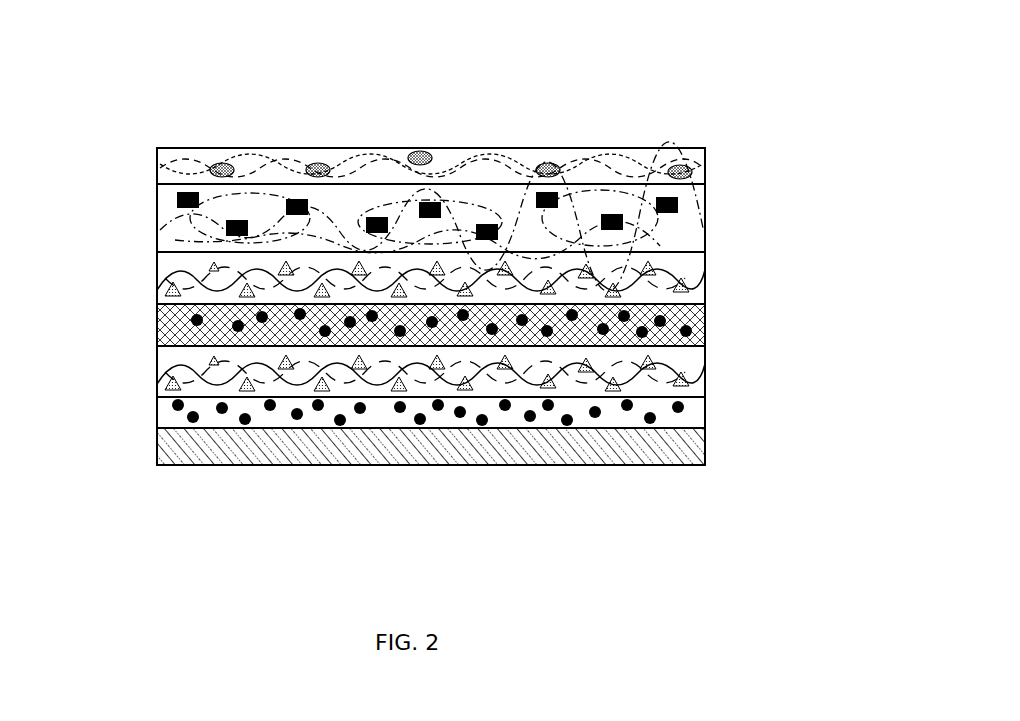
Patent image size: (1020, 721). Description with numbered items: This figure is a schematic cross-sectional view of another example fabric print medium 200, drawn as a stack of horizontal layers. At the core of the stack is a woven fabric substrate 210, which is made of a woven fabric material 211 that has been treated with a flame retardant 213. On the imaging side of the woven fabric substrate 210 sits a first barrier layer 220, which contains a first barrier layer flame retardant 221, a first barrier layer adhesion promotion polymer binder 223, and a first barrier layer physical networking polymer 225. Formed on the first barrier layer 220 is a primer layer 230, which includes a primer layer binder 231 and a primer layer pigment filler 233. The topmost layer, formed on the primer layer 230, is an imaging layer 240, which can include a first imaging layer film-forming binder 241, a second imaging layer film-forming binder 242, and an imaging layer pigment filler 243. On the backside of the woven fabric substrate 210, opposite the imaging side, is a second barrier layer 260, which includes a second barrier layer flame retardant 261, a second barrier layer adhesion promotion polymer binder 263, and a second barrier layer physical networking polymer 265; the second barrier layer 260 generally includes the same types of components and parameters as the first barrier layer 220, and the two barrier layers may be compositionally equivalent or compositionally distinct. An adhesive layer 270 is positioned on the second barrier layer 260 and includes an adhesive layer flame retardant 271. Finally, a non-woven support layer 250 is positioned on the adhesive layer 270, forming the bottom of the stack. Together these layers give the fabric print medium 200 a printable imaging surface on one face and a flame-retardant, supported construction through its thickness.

The fabric print medium 200 is at (168, 40).
The imaging layer 240 is at (452, 133).
The first imaging layer film-forming binder 241 is at (290, 165).
The second imaging layer film-forming binder 242 is at (577, 160).
The imaging layer pigment filler 243 is at (424, 152).
The primer layer 230 is at (455, 214).
The primer layer binder 231 is at (185, 228).
The primer layer pigment filler 233 is at (178, 197).
The first barrier layer 220 is at (485, 259).
The first barrier layer flame retardant 221 is at (690, 264).
The first barrier layer adhesion promotion polymer binder 223 is at (190, 268).
The first barrier layer physical networking polymer 225 is at (690, 278).
The woven fabric substrate 210 is at (437, 317).
The woven fabric material 211 is at (170, 316).
The flame retardant 213 is at (690, 325).
The second barrier layer 260 is at (467, 383).
The second barrier layer flame retardant 261 is at (172, 385).
The second barrier layer adhesion promotion polymer binder 263 is at (190, 362).
The second barrier layer physical networking polymer 265 is at (690, 372).
The adhesive layer 270 is at (448, 428).
The adhesive layer flame retardant 271 is at (172, 413).
The non-woven support layer 250 is at (628, 482).